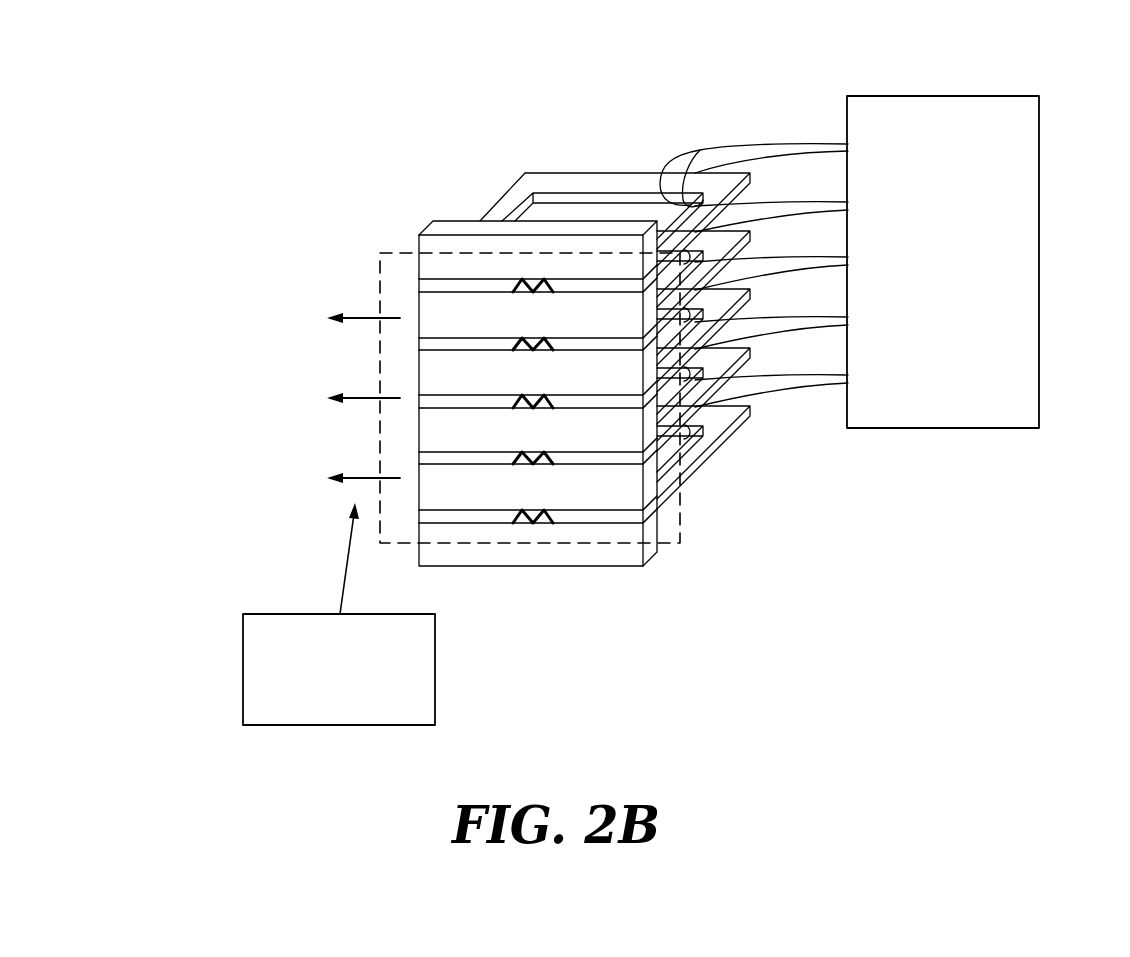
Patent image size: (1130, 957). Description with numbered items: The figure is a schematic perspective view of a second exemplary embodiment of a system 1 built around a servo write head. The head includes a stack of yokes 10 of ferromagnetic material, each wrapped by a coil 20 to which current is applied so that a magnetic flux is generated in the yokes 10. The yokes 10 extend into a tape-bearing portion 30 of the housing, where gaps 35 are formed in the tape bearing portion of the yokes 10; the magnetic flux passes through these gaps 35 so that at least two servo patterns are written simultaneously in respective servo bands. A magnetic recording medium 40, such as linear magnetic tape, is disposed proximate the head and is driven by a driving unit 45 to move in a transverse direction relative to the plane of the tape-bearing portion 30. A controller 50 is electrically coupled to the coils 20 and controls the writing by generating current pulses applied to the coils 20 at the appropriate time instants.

The system 1 is at (222, 106).
The yokes 10 is at (512, 198).
The coils 20 is at (768, 126).
The tape-bearing portion 30 is at (422, 248).
The gaps 35 is at (547, 462).
The magnetic recording medium 40 is at (683, 537).
The driving unit 45 is at (243, 642).
The controller 50 is at (1031, 125).